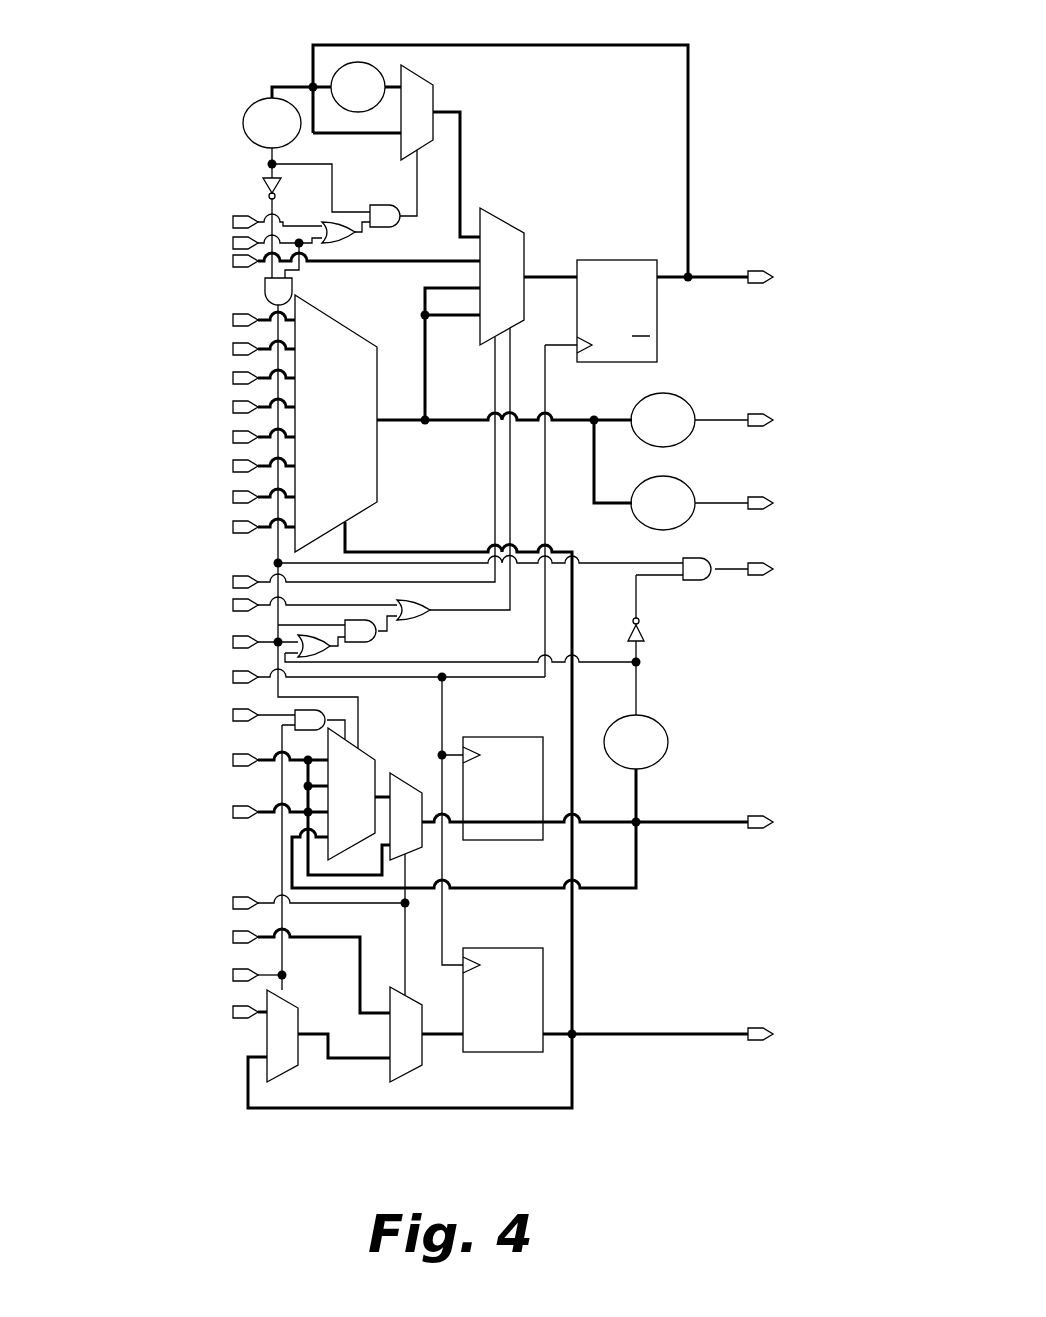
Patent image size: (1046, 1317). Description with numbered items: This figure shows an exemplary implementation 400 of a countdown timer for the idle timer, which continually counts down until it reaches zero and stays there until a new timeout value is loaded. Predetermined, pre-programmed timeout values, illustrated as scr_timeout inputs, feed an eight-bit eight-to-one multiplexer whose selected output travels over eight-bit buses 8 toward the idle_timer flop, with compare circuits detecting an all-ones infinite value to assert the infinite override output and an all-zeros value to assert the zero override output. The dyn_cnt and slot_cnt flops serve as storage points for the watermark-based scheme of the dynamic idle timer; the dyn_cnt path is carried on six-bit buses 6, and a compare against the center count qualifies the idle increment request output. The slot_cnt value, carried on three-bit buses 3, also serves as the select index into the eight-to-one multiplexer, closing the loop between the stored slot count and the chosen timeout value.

The idle timer and slot counter logic circuit 400 is at (157, 44).
The 8-bit bus 8 is at (503, 278).
The 6-bit bus 6 is at (503, 820).
The 3-bit bus 3 is at (498, 818).